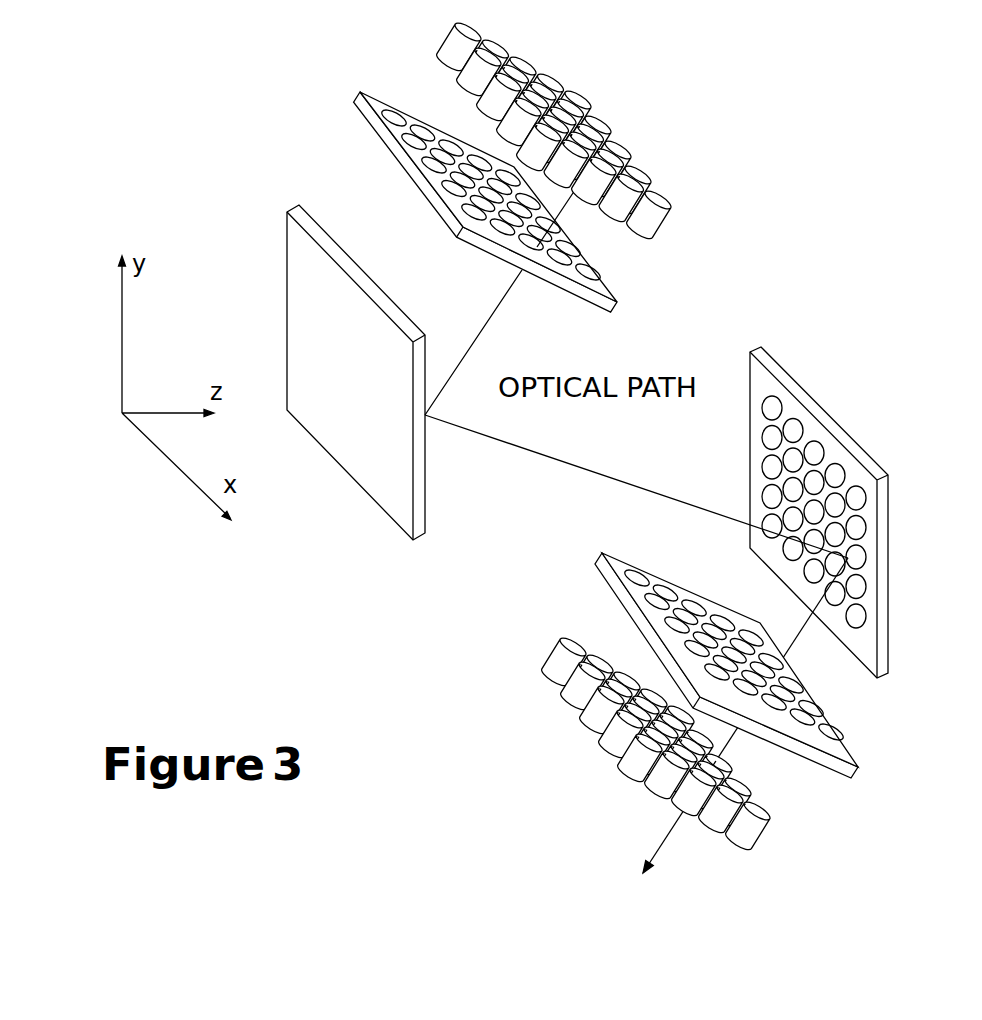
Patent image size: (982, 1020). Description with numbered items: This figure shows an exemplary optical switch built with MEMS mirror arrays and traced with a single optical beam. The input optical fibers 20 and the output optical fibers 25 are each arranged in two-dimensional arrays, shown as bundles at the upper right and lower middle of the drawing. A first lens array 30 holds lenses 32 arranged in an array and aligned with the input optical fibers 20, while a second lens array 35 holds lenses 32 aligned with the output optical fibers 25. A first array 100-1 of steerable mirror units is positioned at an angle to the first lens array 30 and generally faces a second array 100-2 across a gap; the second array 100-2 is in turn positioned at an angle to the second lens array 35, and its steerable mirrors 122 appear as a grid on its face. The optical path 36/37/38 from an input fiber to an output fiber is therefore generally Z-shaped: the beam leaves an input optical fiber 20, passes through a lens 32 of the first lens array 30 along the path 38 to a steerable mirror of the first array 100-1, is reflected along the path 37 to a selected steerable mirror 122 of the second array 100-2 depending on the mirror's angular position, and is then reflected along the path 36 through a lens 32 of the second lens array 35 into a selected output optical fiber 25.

The input optical fibers 20 is at (675, 207).
The output optical fibers 25 is at (544, 689).
The first lens array 30 is at (371, 116).
The lenses 32 is at (398, 106).
The second lens array 35 is at (748, 667).
The optical path 36 is at (799, 642).
The optical path 37 is at (599, 476).
The optical path 38 is at (476, 323).
The first array 100-1 is at (283, 348).
The second array 100-2 is at (842, 419).
The steerable mirror 122 is at (757, 397).